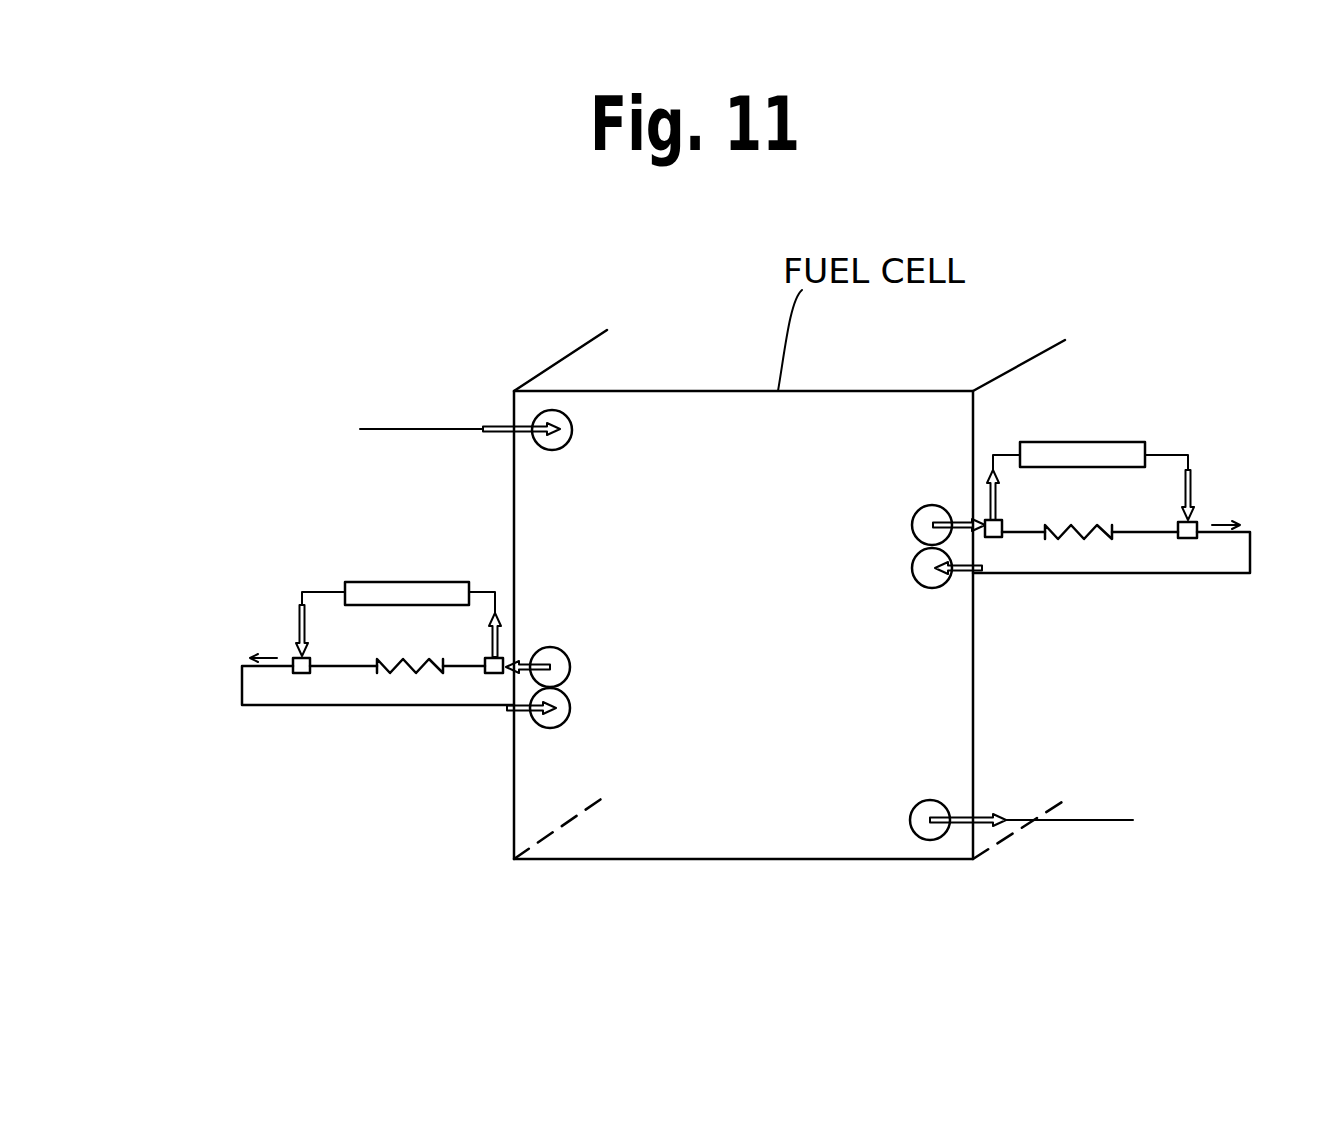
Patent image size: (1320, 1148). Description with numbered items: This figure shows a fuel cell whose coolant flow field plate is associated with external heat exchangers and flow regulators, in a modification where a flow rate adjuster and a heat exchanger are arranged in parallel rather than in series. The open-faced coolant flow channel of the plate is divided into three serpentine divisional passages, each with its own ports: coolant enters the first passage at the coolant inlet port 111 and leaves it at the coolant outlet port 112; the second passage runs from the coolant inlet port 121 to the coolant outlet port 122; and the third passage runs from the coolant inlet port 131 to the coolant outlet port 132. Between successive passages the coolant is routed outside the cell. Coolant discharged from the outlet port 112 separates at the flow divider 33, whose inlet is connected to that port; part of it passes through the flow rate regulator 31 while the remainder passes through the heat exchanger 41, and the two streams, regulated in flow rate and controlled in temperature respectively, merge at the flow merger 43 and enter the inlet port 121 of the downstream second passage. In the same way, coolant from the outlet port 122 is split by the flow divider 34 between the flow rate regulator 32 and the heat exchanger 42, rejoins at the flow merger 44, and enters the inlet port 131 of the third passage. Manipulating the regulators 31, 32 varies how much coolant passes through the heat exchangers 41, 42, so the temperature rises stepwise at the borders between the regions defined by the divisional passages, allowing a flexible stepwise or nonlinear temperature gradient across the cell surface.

The coolant inlet port 111 is at (789, 581).
The flow rate adjuster 31 is at (1077, 442).
The flow rate adjuster 32 is at (396, 582).
The flow divider 33 is at (1000, 522).
The flow divider 34 is at (503, 658).
The heat exchanger 41 is at (1080, 539).
The heat exchanger 42 is at (387, 678).
The flow merger 43 is at (1193, 522).
The flow merger 44 is at (293, 657).
The coolant outlet port 112 is at (947, 543).
The coolant inlet port 121 is at (933, 588).
The coolant outlet port 122 is at (533, 676).
The coolant inlet port 131 is at (545, 727).
The coolant outlet port 132 is at (930, 840).